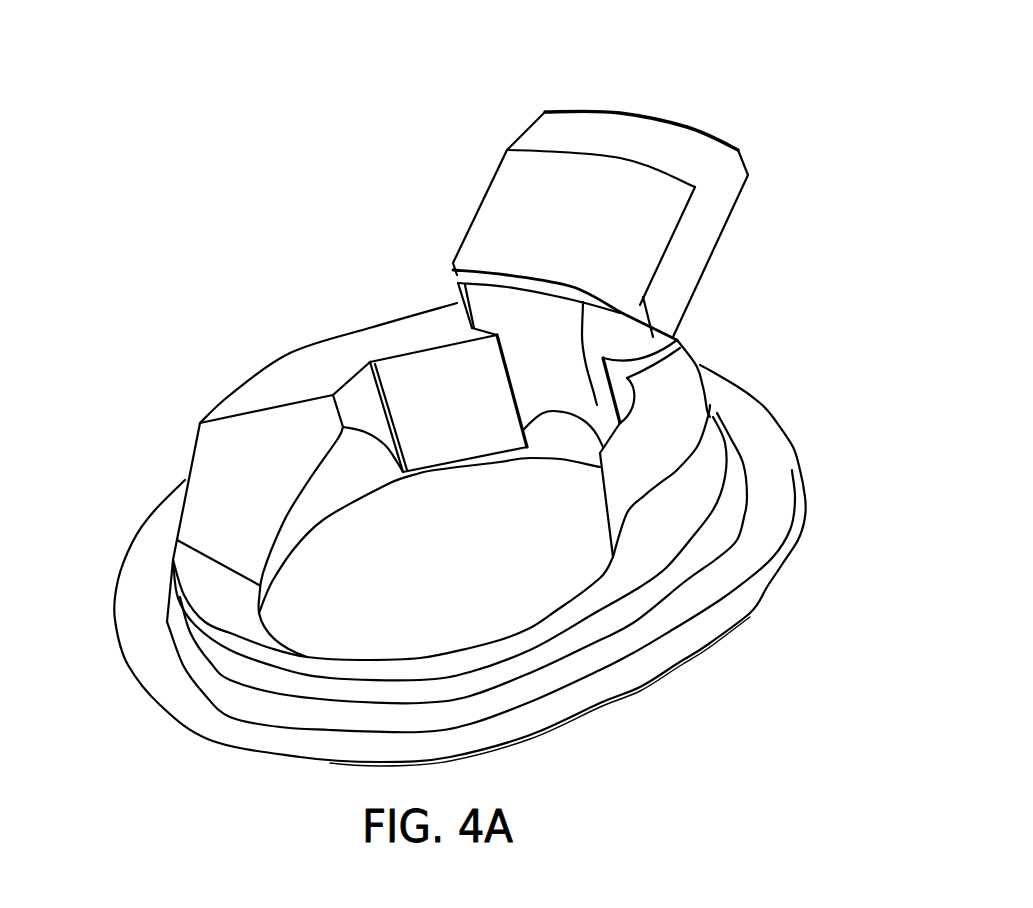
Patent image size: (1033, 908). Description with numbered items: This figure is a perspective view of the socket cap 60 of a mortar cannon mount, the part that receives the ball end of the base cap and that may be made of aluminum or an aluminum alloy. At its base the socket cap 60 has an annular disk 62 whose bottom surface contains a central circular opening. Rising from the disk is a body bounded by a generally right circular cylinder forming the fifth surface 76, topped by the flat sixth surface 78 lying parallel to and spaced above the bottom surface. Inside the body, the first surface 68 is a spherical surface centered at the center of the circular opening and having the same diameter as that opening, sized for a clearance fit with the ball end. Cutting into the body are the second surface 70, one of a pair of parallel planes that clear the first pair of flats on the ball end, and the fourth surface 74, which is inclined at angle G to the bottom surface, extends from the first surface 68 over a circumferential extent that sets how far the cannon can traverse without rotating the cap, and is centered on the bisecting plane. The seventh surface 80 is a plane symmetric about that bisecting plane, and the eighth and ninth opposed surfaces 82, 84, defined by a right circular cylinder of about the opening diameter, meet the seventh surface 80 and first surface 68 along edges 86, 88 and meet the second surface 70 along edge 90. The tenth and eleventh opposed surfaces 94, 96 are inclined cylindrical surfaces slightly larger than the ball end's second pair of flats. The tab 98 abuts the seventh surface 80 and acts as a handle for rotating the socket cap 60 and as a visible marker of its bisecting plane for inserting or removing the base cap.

The socket cap 60 is at (183, 327).
The annular disk 62 is at (212, 725).
The first surface 68 is at (353, 504).
The second surface 70 is at (345, 397).
The fourth surface 74 is at (258, 617).
The fifth surface 76 is at (657, 560).
The sixth surface 78 is at (292, 355).
The seventh surface 80 is at (593, 407).
The eighth surface 82 is at (427, 357).
The ninth surface 84 is at (680, 352).
The edge 86 is at (508, 380).
The edge 88 is at (603, 357).
The edge 90 is at (373, 360).
The tenth surface 94 is at (195, 497).
The eleventh surface 96 is at (613, 557).
The tab 98 is at (643, 123).